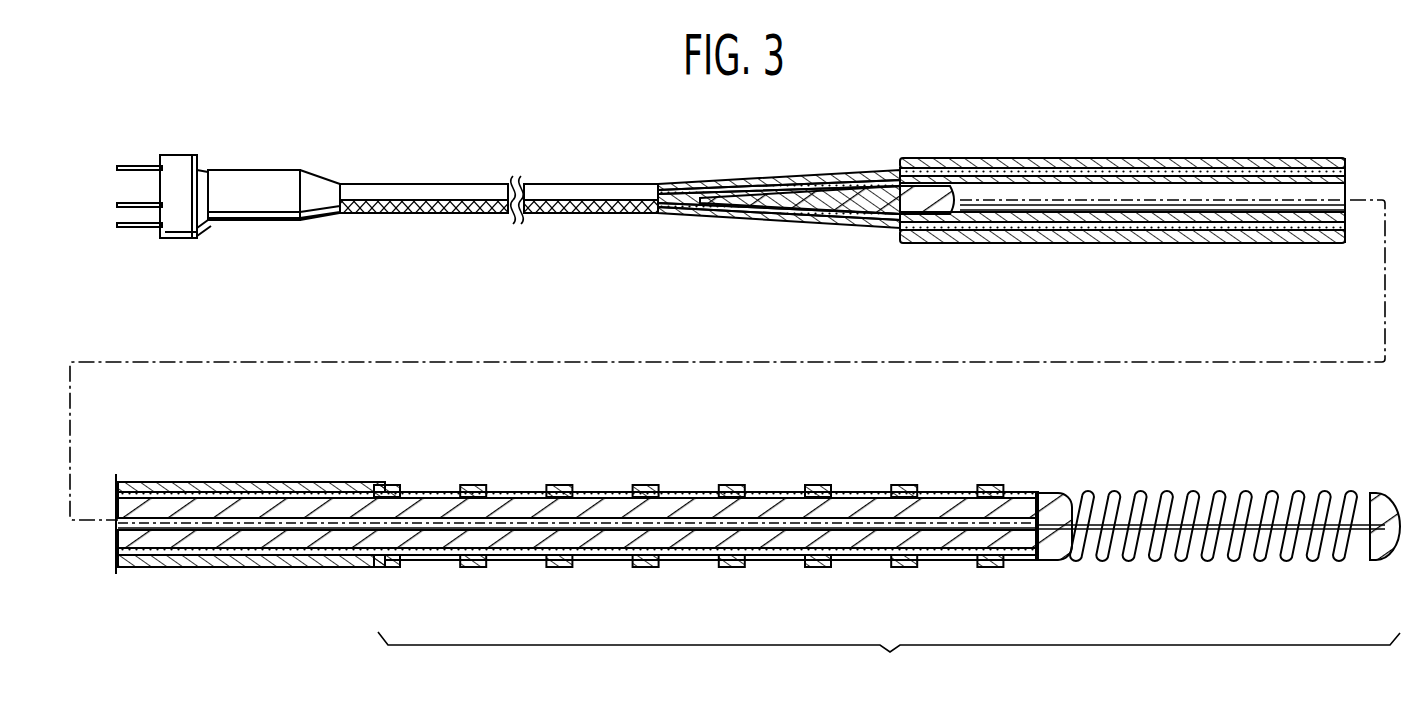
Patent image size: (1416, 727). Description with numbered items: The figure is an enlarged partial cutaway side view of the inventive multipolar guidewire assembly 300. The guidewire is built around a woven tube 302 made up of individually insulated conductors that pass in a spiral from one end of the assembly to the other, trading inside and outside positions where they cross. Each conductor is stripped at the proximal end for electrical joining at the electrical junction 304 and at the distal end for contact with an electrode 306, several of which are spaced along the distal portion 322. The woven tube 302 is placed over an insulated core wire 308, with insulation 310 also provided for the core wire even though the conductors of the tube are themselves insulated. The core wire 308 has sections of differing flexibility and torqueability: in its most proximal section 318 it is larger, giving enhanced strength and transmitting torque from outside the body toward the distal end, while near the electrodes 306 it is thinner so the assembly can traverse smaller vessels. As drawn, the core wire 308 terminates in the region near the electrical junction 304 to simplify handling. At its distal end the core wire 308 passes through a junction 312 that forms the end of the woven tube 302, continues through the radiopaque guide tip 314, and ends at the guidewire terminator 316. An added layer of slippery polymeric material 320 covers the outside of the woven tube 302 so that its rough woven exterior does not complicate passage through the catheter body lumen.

The guidewire assembly 300 is at (1228, 96).
The woven tube 302 is at (737, 225).
The electrical junction 304 is at (265, 185).
The electrode 306 is at (471, 484).
The core wire 308 is at (160, 527).
The insulation 310 is at (1096, 176).
The junction 312 is at (1050, 495).
The guide tip 314 is at (1205, 563).
The guidewire terminator 316 is at (1390, 505).
The most proximal section of the core wire 318 is at (987, 198).
The polymeric material layer 320 is at (1130, 236).
The distal portion 322 is at (889, 661).